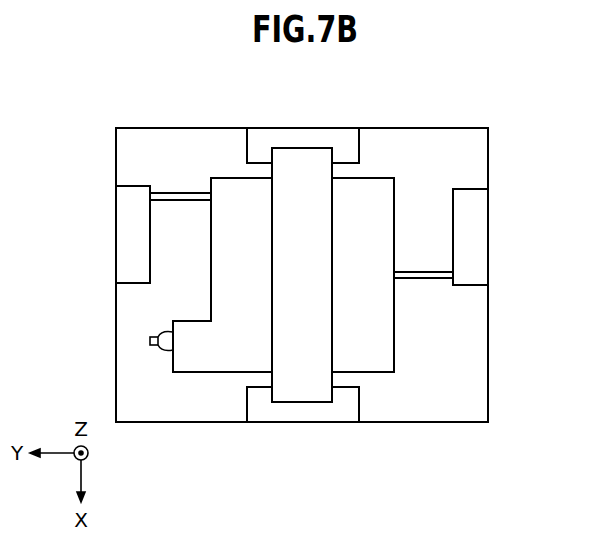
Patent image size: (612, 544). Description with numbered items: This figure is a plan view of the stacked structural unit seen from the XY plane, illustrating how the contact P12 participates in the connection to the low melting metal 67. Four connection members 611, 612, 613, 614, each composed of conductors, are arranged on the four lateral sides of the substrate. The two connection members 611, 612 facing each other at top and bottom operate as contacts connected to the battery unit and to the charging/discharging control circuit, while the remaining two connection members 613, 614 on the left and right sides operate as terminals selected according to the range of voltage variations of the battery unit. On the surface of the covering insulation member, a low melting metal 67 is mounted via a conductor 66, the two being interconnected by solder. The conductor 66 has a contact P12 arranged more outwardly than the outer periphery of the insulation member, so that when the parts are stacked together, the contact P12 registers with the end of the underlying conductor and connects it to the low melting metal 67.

The low melting metal 67 is at (297, 160).
The connection member 611 is at (327, 138).
The connection member 612 is at (303, 413).
The conductor 66 is at (378, 360).
The connection member 613 is at (480, 220).
The connection member 614 is at (127, 218).
The contact P12 is at (166, 343).